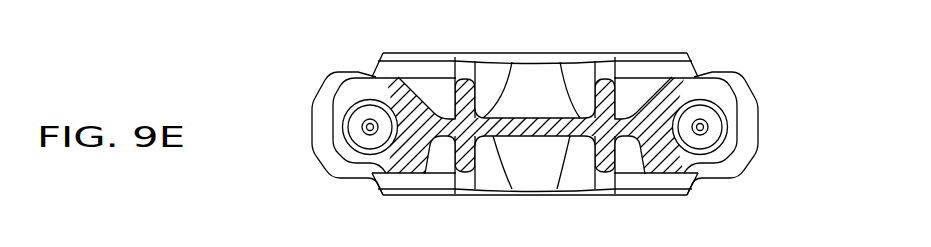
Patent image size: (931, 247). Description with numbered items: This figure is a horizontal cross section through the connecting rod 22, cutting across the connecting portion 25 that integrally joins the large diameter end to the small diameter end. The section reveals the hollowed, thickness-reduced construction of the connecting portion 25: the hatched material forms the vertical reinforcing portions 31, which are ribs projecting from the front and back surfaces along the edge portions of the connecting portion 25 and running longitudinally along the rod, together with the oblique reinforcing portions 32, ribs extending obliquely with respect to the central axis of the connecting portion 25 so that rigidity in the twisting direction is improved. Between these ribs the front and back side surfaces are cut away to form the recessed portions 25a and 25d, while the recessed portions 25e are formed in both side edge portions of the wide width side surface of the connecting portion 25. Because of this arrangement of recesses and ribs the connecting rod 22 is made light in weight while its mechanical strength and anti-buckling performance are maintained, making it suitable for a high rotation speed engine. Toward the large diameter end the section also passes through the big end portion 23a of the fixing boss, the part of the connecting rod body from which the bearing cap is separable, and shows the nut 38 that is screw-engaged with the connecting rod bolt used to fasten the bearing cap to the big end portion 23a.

The connecting rod 22 is at (756, 72).
The big end portion of fixing boss 23a is at (325, 113).
The connecting portion 25 is at (558, 116).
The recessed portion 25a is at (541, 87).
The recessed portion 25d is at (444, 87).
The recessed portion 25e is at (413, 133).
The vertical reinforcing portion 31 is at (397, 77).
The oblique reinforcing portion 32 is at (462, 79).
The nut 38 is at (370, 100).